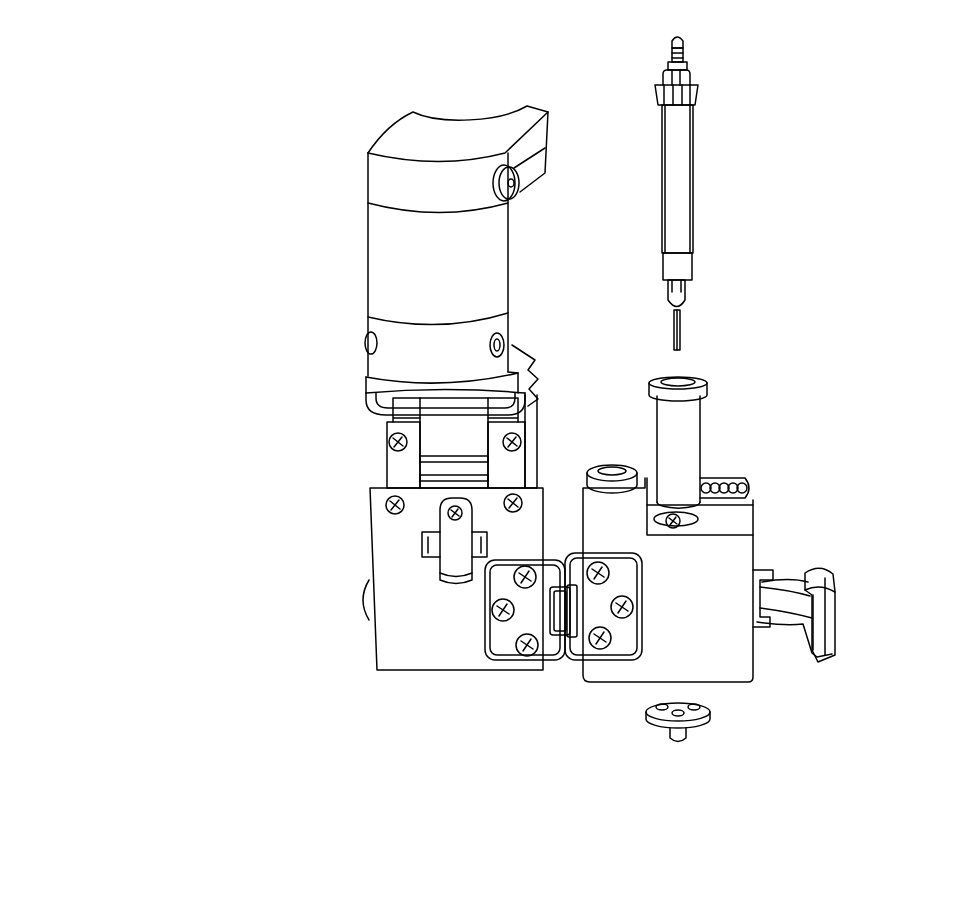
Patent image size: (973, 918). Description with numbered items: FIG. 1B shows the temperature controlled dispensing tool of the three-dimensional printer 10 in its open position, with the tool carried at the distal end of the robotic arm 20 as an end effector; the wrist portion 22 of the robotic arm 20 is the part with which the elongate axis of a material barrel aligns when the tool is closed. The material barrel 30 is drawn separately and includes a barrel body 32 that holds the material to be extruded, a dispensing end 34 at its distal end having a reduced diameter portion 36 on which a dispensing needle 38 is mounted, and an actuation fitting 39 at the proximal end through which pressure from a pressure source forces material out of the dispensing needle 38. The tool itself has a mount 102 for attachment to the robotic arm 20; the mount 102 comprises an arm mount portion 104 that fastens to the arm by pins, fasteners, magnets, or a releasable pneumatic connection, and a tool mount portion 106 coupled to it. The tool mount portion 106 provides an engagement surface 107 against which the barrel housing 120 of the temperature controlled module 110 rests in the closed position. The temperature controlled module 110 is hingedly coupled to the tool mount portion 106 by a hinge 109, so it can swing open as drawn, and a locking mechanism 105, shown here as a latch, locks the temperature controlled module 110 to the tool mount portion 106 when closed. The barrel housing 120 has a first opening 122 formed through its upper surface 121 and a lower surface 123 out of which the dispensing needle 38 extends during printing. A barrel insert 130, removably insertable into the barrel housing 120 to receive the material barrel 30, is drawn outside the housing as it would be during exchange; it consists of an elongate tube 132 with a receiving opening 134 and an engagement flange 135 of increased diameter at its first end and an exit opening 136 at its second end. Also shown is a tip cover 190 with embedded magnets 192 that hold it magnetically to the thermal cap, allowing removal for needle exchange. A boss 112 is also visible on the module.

The three-dimensional printer 10 is at (196, 93).
The robotic arm 20 is at (326, 222).
The wrist portion 22 is at (512, 251).
The material barrel 30 is at (809, 100).
The barrel body 32 is at (697, 160).
The dispensing end 34 is at (731, 283).
The reduced diameter portion 36 is at (664, 298).
The dispensing needle 38 is at (682, 322).
The actuation fitting 39 is at (646, 73).
The mount 102 is at (269, 370).
The arm mount portion 104 is at (366, 334).
The locking mechanism 105 is at (835, 598).
The tool mount portion 106 is at (353, 495).
The engagement surface 107 is at (383, 540).
The hinge 109 is at (559, 670).
The temperature controlled module 110 is at (873, 467).
The boss 112 is at (600, 468).
The barrel housing 120 is at (780, 707).
The upper surface 121 is at (740, 528).
The first opening 122 is at (695, 522).
The lower surface 123 is at (731, 690).
The barrel insert 130 is at (793, 392).
The elongate tube 132 is at (702, 422).
The receiving opening 134 is at (655, 382).
The engagement flange 135 is at (705, 383).
The exit opening 136 is at (676, 528).
The tip cover 190 is at (648, 736).
The embedded magnets 192 is at (655, 700).